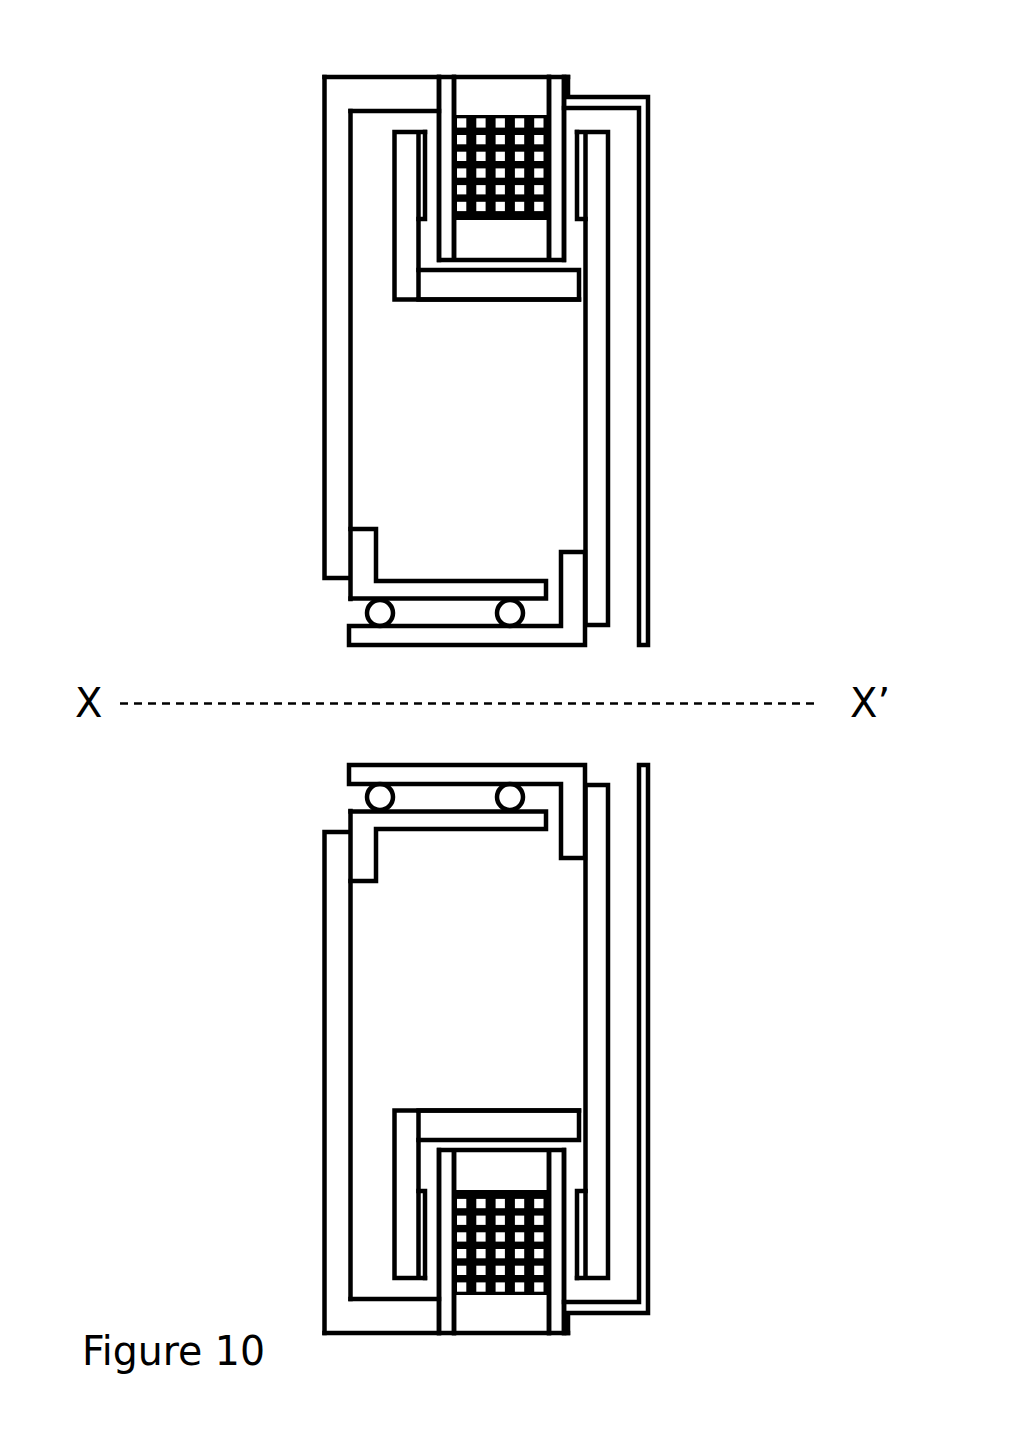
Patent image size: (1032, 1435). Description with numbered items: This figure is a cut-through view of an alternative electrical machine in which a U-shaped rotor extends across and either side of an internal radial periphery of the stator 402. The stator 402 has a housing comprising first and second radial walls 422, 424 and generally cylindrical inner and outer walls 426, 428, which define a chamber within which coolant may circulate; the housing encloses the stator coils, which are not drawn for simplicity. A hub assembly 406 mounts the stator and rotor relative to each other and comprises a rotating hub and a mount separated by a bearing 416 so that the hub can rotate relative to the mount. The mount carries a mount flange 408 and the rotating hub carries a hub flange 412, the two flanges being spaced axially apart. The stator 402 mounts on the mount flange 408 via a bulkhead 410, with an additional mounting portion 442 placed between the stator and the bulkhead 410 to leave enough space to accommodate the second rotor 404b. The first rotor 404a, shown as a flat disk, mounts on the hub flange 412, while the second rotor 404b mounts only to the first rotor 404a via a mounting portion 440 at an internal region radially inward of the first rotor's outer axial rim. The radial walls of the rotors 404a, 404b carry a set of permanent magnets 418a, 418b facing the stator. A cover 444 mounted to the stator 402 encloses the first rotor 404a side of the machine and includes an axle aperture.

The stator 402 is at (499, 695).
The first rotor 404a is at (600, 470).
The second rotor 404b is at (403, 232).
The hub assembly 406 is at (427, 674).
The mount flange 408 is at (367, 548).
The bulkhead 410 is at (338, 477).
The hub flange 412 is at (570, 580).
The bearing 416 is at (380, 608).
The permanent magnets 418a is at (577, 200).
The second magnet plate 418b is at (417, 178).
The first radial wall 422 is at (553, 226).
The second radial wall 424 is at (443, 132).
The inner wall 426 is at (507, 237).
The outer wall 428 is at (537, 145).
The mounting portion 440 is at (507, 288).
The additional mounting portion 442 is at (407, 95).
The cover 444 is at (650, 565).